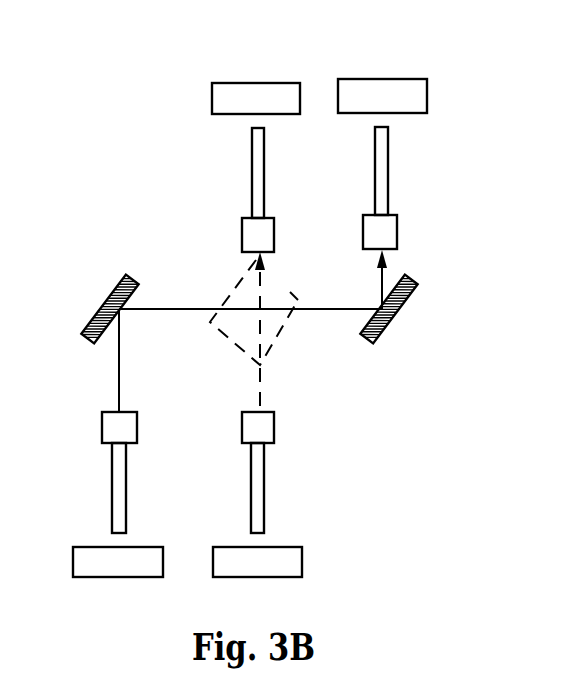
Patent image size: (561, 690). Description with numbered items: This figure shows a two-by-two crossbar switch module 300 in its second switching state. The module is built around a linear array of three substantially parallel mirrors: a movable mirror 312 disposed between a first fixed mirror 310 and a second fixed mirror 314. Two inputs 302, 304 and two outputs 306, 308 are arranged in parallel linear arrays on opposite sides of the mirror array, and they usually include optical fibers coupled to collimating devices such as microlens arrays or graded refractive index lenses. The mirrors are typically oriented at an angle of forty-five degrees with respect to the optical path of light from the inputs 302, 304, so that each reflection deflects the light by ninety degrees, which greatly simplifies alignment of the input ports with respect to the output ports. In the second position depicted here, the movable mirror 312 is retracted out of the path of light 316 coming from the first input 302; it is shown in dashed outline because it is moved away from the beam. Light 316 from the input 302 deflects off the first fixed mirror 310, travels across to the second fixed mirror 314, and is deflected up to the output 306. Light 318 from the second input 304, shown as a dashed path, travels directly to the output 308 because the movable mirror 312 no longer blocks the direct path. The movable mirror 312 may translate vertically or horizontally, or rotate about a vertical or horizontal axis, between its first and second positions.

The crossbar switch module 300 is at (172, 63).
The first input 302 is at (126, 478).
The second input 304 is at (264, 480).
The first output 306 is at (410, 163).
The second output 308 is at (251, 158).
The first fixed mirror 310 is at (103, 302).
The movable mirror 312 is at (272, 280).
The second fixed mirror 314 is at (408, 297).
The light from the first input 316 is at (155, 309).
The light from the second input 318 is at (262, 365).